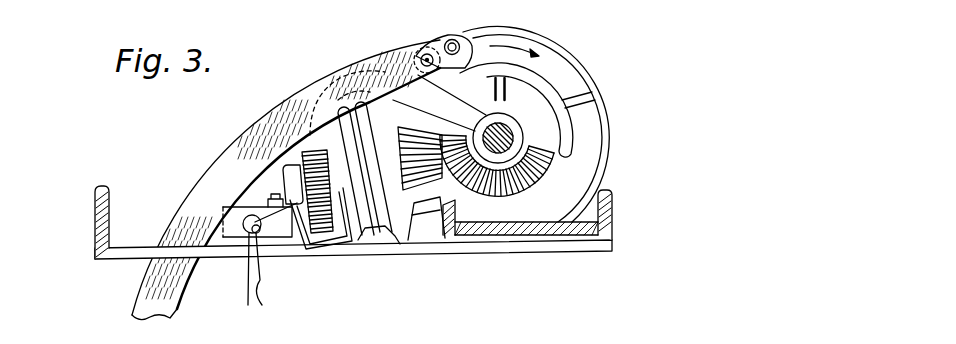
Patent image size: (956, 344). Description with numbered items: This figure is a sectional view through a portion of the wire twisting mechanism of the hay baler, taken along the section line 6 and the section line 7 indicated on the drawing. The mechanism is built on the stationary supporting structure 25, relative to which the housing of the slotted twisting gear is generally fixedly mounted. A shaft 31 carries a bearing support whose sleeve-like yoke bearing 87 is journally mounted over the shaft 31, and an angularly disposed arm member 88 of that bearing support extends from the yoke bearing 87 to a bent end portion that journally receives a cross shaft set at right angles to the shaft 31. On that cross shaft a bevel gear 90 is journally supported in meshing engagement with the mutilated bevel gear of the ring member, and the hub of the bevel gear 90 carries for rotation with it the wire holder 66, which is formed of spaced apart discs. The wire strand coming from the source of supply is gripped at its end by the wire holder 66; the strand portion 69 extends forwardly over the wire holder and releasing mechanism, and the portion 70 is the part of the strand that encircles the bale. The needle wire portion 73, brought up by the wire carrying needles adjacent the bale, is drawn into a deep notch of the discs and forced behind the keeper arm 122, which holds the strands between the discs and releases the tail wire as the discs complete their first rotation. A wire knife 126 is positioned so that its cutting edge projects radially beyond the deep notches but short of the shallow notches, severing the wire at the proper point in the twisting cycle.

The section line 6-6 / curved cover 6 is at (265, 150).
The section line 7-7 / cam outline 7 is at (337, 93).
The stationary supporting structure 25 is at (92, 220).
The shaft 31 is at (516, 138).
The wire holder 66 is at (382, 90).
The strand portion over the wire holder and releasing mechanism 69 is at (347, 237).
The bale encircling wire strand portion 70 is at (269, 279).
The needle wire strand portion 73 is at (247, 285).
The yoke bearing 87 is at (518, 122).
The arm member 88 is at (454, 39).
The bevel gear 90 is at (442, 188).
The keeper arm 122 is at (401, 233).
The wire knife 126 is at (362, 240).